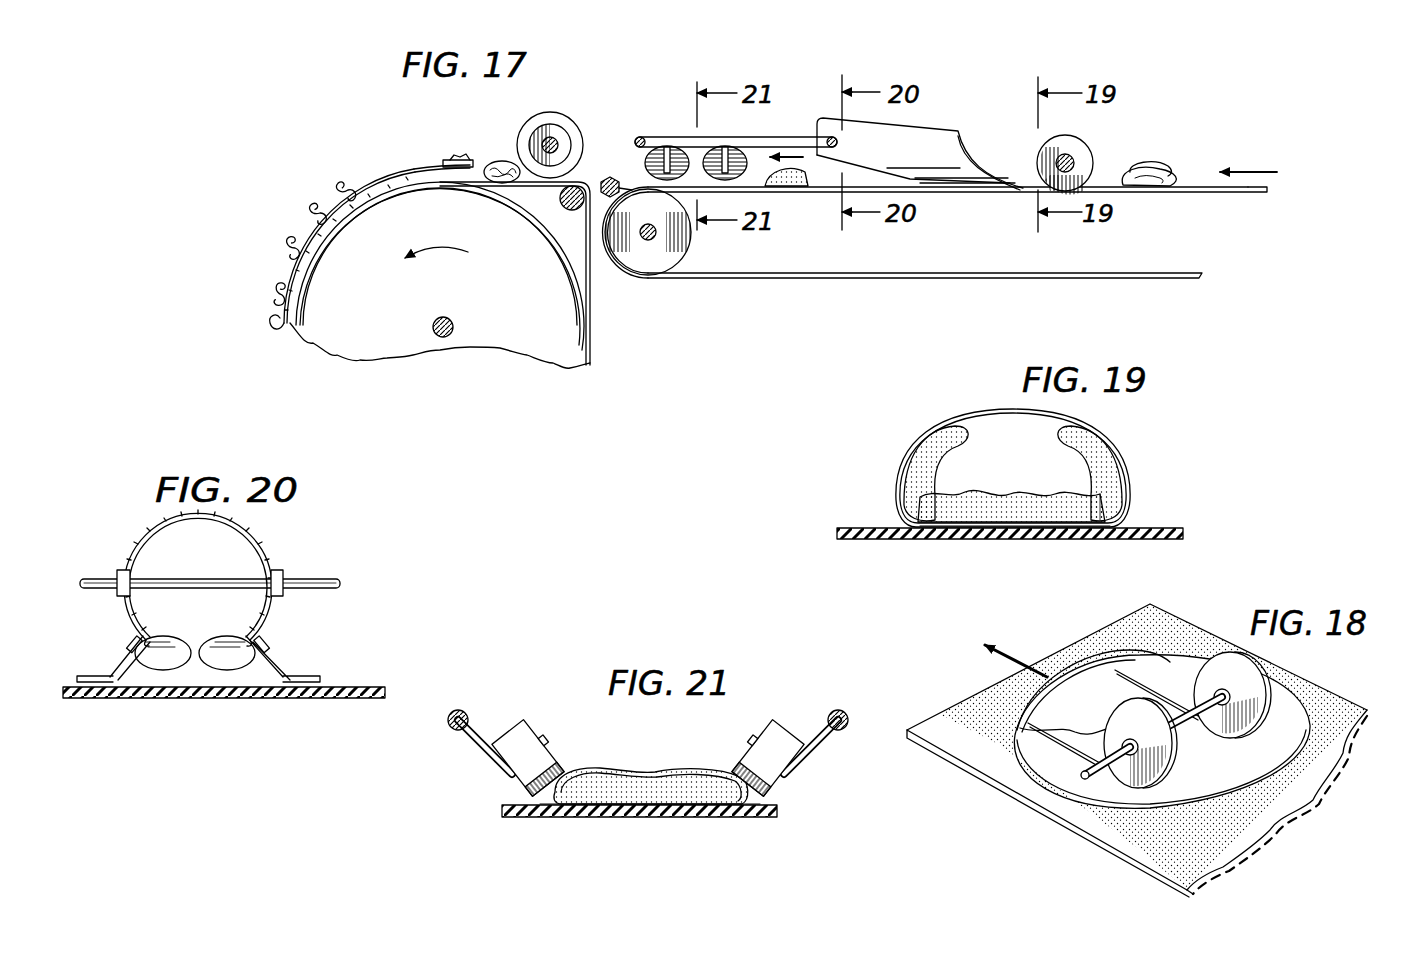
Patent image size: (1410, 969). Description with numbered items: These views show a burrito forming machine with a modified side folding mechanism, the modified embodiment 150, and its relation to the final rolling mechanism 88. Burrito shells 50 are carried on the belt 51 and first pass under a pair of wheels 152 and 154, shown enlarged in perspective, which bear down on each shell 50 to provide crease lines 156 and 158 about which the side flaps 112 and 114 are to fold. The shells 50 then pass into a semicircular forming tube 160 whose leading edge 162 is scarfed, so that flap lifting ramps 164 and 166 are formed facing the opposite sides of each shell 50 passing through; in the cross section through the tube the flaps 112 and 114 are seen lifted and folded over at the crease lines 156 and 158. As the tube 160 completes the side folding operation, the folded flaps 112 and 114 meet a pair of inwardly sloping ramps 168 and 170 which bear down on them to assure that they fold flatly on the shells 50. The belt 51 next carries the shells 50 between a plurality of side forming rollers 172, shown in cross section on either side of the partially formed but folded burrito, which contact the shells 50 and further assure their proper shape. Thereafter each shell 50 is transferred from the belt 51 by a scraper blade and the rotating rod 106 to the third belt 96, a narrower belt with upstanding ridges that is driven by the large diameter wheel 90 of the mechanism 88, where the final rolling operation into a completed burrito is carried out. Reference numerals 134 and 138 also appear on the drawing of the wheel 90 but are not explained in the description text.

In FIG. 17, the burrito shell 50 is at (1262, 196).
In FIG. 19, the burrito shell 50 is at (1028, 528).
In FIG. 21, the burrito shell 50 is at (680, 806).
In FIG. 18, the burrito shell 50 is at (1290, 762).
In FIG. 17, the second belt 51 is at (742, 277).
In FIG. 19, the second belt 51 is at (957, 540).
In FIG. 20, the second belt 51 is at (224, 692).
In FIG. 21, the second belt 51 is at (752, 818).
In FIG. 18, the second belt 51 is at (1163, 853).
In FIG. 17, the mechanism 88 is at (366, 165).
In FIG. 17, the large diameter wheel 90 is at (552, 345).
In FIG. 17, the third belt 96 is at (592, 287).
In FIG. 17, the rotating rod 106 is at (612, 172).
In FIG. 19, the side flap 112 is at (902, 465).
In FIG. 21, the side flap 112 is at (690, 770).
In FIG. 18, the side flap 112 is at (1035, 752).
In FIG. 19, the side flap 114 is at (1126, 474).
In FIG. 21, the side flap 114 is at (615, 773).
In FIG. 18, the side flap 114 is at (1170, 668).
In FIG. 17, the web guide strip 134 is at (410, 170).
In FIG. 17, the gripping fingers 138 is at (270, 262).
In FIG. 17, the modified embodiment 150 is at (683, 68).
In FIG. 17, the creasing wheel 152 is at (1083, 157).
In FIG. 18, the creasing wheel 152 is at (1127, 780).
In FIG. 18, the creasing wheel 154 is at (1193, 663).
In FIG. 18, the crease line 156 is at (1062, 752).
In FIG. 18, the crease line 158 is at (1157, 670).
In FIG. 17, the semicircular forming tube 160 is at (940, 125).
In FIG. 19, the semicircular forming tube 160 is at (980, 404).
In FIG. 20, the semicircular forming tube 160 is at (272, 548).
In FIG. 17, the leading edge 162 is at (992, 178).
In FIG. 17, the flap lifting ramp 164 is at (870, 156).
In FIG. 19, the flap lifting ramp 164 is at (896, 502).
In FIG. 19, the flap lifting ramp 166 is at (1125, 505).
In FIG. 17, the inwardly sloping ramp 168 is at (818, 176).
In FIG. 20, the inwardly sloping ramp 168 is at (120, 672).
In FIG. 20, the inwardly sloping ramp 170 is at (283, 670).
In FIG. 17, the side forming rollers 172 is at (657, 152).
In FIG. 21, the side forming rollers 172 is at (522, 736).